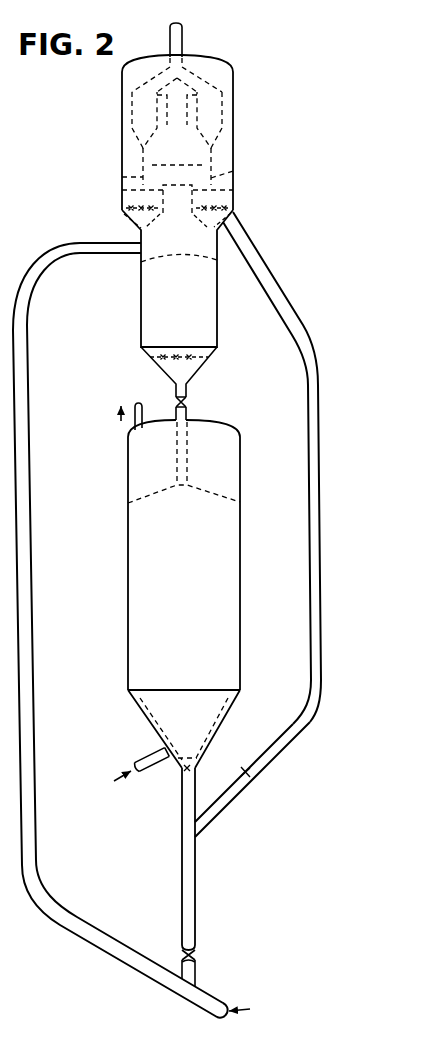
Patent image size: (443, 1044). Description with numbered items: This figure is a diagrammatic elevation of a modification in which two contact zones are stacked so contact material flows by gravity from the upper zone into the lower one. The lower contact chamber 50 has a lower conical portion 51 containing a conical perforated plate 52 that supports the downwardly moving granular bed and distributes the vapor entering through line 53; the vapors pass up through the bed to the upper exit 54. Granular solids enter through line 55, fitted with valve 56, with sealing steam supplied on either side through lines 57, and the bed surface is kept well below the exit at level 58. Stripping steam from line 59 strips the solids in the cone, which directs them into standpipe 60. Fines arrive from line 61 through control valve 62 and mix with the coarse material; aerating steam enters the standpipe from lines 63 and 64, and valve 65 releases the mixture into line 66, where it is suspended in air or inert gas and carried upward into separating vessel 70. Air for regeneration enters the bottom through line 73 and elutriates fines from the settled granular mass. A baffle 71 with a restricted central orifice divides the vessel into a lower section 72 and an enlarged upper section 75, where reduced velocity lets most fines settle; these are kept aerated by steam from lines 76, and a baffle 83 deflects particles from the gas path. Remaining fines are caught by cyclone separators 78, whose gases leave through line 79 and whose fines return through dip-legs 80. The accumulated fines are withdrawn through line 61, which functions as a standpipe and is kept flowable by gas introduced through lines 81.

The contact chamber 50 is at (128, 561).
The lower conical portion 51 is at (138, 716).
The conical perforated plate 52 is at (162, 736).
The line 53 is at (149, 753).
The upper exit 54 is at (134, 425).
The line 55 is at (174, 389).
The valve 56 is at (174, 403).
The lines 57 is at (189, 392).
The level 58 is at (135, 493).
The line 59 is at (178, 771).
The standpipe 60 is at (190, 896).
The line 61 is at (297, 720).
The control valve 62 is at (249, 774).
The line 63 is at (198, 844).
The line 64 is at (198, 932).
The valve 65 is at (197, 953).
The line 66 is at (155, 977).
The separating vessel 70 is at (141, 295).
The baffle 71 is at (126, 222).
The lower section 72 is at (212, 252).
The line 73 is at (148, 358).
The upper section 75 is at (228, 153).
The lines 76 is at (121, 208).
The cyclone separators 78 is at (121, 110).
The line 79 is at (180, 37).
The dip-legs 80 is at (122, 176).
The lines 81 is at (322, 505).
The baffle 83 is at (172, 163).